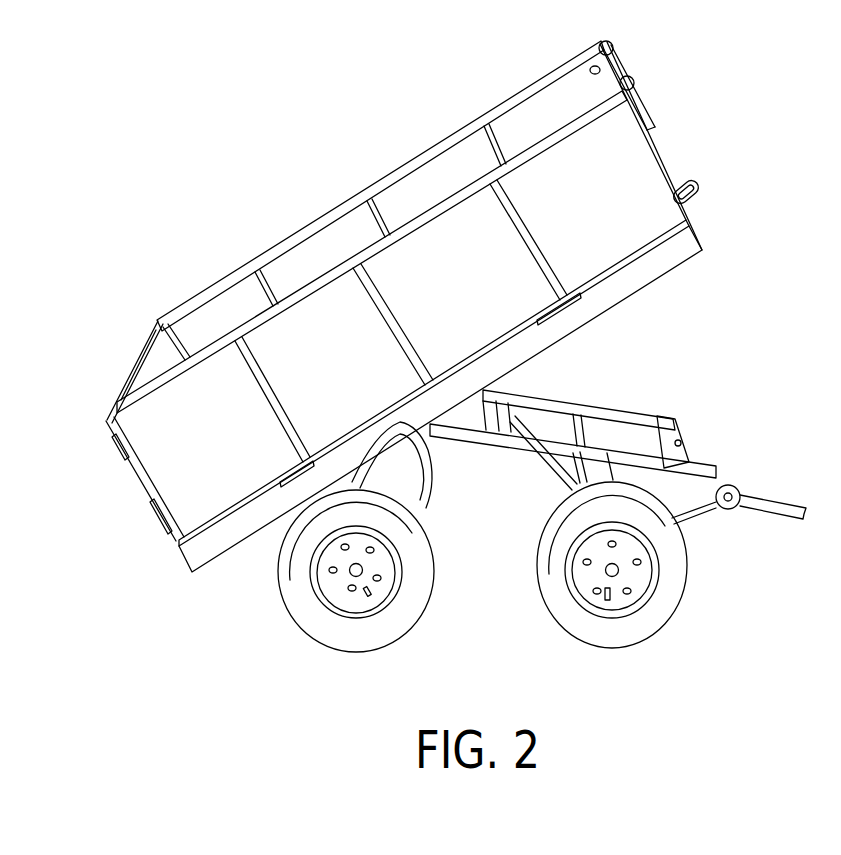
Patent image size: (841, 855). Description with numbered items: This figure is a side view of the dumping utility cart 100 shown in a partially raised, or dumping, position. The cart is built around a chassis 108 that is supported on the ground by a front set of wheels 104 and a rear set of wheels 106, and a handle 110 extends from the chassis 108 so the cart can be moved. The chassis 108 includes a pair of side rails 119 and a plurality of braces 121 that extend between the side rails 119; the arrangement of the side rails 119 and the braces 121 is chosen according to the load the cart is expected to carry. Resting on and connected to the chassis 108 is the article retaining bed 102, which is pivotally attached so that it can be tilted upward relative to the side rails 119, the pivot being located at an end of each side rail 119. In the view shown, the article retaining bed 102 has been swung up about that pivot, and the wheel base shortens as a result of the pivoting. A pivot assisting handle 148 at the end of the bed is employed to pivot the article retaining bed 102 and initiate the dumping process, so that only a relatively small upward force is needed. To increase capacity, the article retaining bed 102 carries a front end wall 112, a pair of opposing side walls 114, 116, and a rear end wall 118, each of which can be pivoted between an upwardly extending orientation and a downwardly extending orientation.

The dumping utility cart 100 is at (276, 636).
The article retaining bed 102 is at (192, 563).
The front set of wheels 104 is at (665, 606).
The rear set of wheels 106 is at (372, 645).
The chassis 108 is at (508, 442).
The handle 110 is at (767, 519).
The front end wall 112 is at (612, 70).
The side wall 114 is at (219, 497).
The side wall 116 is at (530, 112).
The rear end wall 118 is at (148, 360).
The side rails 119 is at (625, 413).
The braces 121 is at (685, 450).
The pivot assisting handle 148 is at (704, 190).